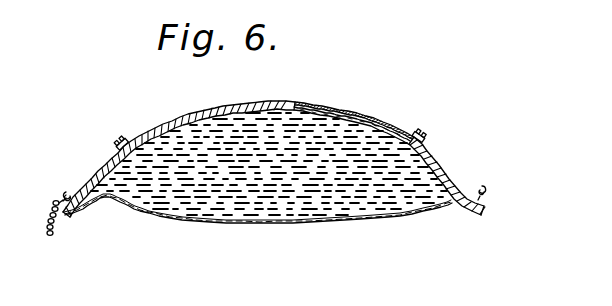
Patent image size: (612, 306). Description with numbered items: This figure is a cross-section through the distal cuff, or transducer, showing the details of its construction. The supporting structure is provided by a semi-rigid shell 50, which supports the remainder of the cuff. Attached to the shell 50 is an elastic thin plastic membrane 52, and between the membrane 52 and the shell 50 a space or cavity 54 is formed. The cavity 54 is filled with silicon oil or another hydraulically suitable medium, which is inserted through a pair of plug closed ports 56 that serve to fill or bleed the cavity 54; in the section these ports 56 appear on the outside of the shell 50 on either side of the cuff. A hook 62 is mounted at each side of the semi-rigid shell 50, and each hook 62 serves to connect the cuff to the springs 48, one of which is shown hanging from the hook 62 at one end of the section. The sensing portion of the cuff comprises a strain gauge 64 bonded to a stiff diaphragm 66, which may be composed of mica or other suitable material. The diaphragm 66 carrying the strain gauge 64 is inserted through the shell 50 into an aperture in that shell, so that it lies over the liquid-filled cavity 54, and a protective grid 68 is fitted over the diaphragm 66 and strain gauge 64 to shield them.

The springs 48 is at (56, 229).
The semi-rigid shell 50 is at (90, 188).
The elastic thin plastic membrane 52 is at (167, 219).
The cavity 54 is at (300, 215).
The plug closed ports 56 is at (127, 133).
The hook 62 is at (66, 188).
The strain gauge 64 is at (371, 121).
The stiff diaphragm 66 is at (343, 116).
The protective grid 68 is at (323, 106).